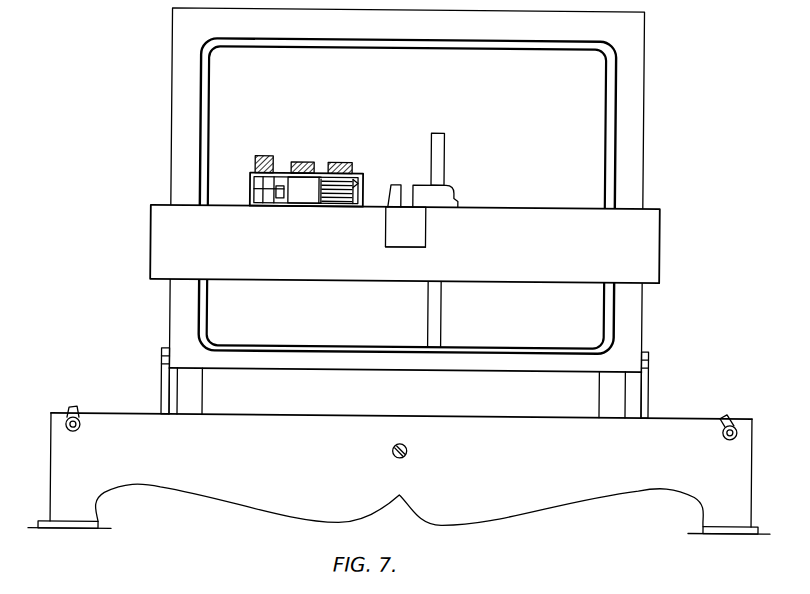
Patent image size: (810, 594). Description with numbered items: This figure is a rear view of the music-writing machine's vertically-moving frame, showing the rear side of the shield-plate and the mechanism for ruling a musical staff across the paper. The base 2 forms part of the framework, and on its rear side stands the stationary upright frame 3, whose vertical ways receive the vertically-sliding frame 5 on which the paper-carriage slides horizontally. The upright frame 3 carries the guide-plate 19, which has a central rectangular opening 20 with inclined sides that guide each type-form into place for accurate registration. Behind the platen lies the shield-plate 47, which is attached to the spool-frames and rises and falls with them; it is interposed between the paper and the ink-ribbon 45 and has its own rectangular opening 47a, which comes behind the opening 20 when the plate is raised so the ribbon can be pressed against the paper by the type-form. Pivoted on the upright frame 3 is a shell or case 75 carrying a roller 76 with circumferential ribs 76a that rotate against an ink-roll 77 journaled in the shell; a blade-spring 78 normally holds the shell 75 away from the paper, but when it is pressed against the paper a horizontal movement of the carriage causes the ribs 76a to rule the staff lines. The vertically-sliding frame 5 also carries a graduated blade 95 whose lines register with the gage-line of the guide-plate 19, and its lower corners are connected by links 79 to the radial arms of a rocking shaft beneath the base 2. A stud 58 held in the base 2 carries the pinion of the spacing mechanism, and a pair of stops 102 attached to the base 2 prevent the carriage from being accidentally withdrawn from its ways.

The base 2 is at (221, 496).
The stationary upright frame 3 is at (207, 93).
The vertically-sliding frame 5 is at (170, 108).
The guide-plate 19 is at (453, 195).
The rectangular opening 20 is at (404, 195).
The ink-ribbon 45 is at (403, 228).
The shield-plate 47 is at (278, 282).
The rectangular opening 47a is at (424, 238).
The stud 58 is at (407, 456).
The shell or case 75 is at (300, 209).
The roller 76 is at (343, 205).
The circumferential ribs 76a is at (357, 181).
The ink-roll 77 is at (298, 200).
The blade-spring 78 is at (268, 193).
The links 79 is at (162, 390).
The graduated blade 95 is at (443, 156).
The stops 102 is at (67, 427).